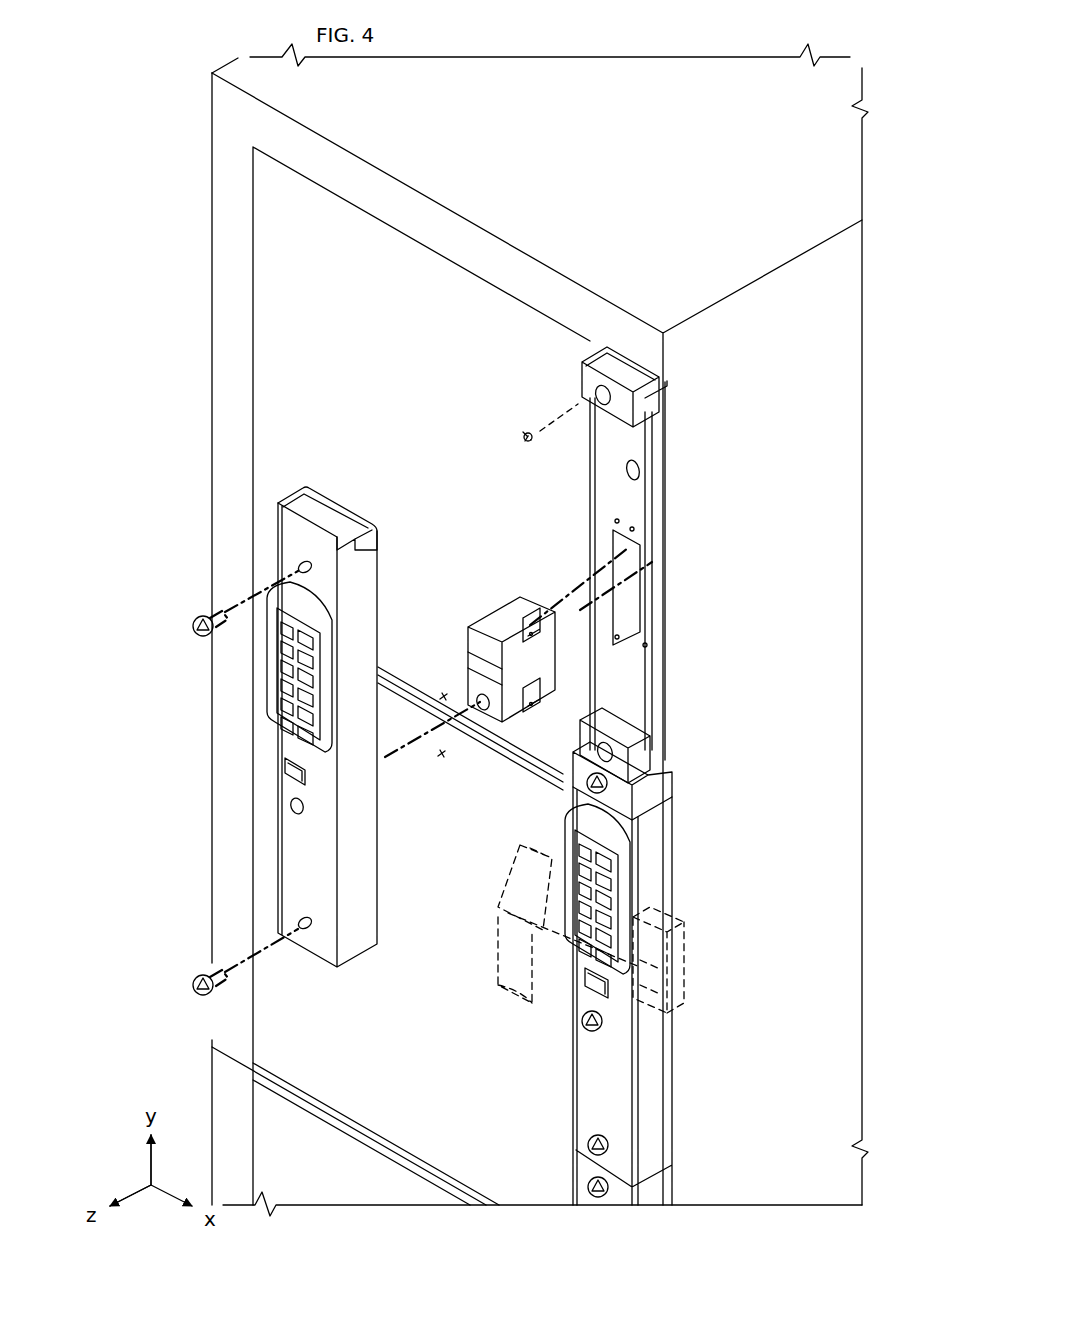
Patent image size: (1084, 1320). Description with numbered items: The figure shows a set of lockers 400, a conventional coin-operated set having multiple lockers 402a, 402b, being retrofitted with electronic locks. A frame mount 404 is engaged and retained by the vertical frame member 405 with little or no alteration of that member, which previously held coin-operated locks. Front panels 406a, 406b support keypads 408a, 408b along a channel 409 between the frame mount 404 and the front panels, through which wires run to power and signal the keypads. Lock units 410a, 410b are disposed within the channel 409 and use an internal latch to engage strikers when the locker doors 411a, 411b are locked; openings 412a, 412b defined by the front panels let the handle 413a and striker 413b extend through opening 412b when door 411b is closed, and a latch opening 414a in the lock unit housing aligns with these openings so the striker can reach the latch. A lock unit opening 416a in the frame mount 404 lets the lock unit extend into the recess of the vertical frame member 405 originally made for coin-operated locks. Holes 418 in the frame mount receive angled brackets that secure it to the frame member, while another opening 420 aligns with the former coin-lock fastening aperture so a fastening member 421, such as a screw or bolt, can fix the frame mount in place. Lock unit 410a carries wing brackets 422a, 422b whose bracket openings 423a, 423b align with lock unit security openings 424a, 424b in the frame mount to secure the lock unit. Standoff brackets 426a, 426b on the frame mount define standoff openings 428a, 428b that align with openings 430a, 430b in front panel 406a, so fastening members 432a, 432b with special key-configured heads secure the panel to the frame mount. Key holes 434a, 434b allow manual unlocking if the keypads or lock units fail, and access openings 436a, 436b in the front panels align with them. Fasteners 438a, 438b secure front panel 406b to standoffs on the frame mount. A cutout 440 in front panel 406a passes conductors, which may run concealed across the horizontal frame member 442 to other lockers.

The set of lockers 400 is at (870, 60).
The locker 402a is at (182, 300).
The locker 402b is at (190, 913).
The frame mount 404 is at (666, 405).
The vertical frame member 405 is at (645, 365).
The front panel 406a is at (330, 852).
The front panel 406b is at (625, 1065).
The keypad 408a is at (260, 668).
The keypad 408b is at (632, 880).
The channel 409 is at (625, 365).
The lock unit 410a is at (504, 605).
The lock unit 410b is at (745, 905).
The locker door 411a is at (334, 208).
The locker door 411b is at (323, 1084).
The opening 412a is at (288, 768).
The opening 412b is at (582, 982).
The handle 413a is at (505, 868).
The striker 413b is at (500, 945).
The latch opening 414a is at (470, 660).
The lock unit opening 416a is at (641, 590).
The holes 418 is at (631, 526).
The opening 420 is at (626, 470).
The fastening member 421 is at (524, 435).
The wing bracket 422a is at (530, 622).
The wing bracket 422b is at (531, 712).
The bracket opening 423a is at (478, 628).
The bracket opening 423b is at (512, 700).
The lock unit security opening 424a is at (652, 545).
The lock unit security opening 424b is at (652, 645).
The standoff bracket 426a is at (581, 380).
The standoff bracket 426b is at (664, 780).
The standoff opening 428a is at (615, 430).
The standoff opening 428b is at (640, 765).
The opening 430a is at (306, 487).
The opening 430b is at (300, 921).
The fastening member 432a is at (207, 616).
The fastening member 432b is at (205, 997).
The key hole 434a is at (484, 710).
The key hole 434b is at (595, 1032).
The access opening 436a is at (302, 812).
The access opening 436b is at (584, 1030).
The fastener 438a is at (585, 790).
The fastener 438b is at (586, 1145).
The cutout 440 is at (380, 536).
The horizontal frame member 442 is at (224, 100).